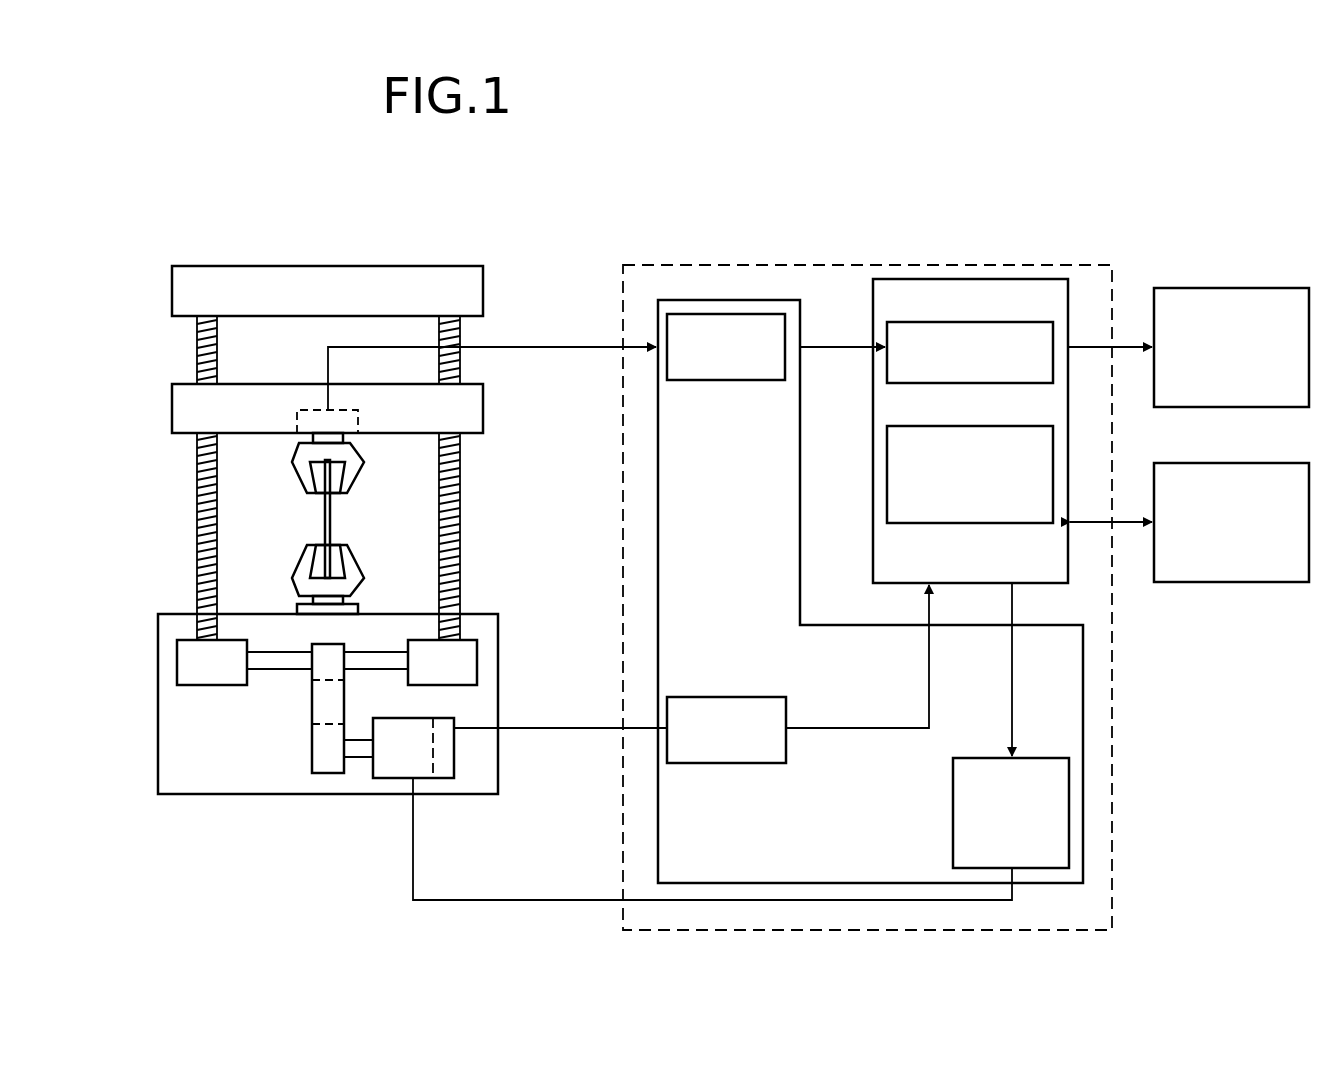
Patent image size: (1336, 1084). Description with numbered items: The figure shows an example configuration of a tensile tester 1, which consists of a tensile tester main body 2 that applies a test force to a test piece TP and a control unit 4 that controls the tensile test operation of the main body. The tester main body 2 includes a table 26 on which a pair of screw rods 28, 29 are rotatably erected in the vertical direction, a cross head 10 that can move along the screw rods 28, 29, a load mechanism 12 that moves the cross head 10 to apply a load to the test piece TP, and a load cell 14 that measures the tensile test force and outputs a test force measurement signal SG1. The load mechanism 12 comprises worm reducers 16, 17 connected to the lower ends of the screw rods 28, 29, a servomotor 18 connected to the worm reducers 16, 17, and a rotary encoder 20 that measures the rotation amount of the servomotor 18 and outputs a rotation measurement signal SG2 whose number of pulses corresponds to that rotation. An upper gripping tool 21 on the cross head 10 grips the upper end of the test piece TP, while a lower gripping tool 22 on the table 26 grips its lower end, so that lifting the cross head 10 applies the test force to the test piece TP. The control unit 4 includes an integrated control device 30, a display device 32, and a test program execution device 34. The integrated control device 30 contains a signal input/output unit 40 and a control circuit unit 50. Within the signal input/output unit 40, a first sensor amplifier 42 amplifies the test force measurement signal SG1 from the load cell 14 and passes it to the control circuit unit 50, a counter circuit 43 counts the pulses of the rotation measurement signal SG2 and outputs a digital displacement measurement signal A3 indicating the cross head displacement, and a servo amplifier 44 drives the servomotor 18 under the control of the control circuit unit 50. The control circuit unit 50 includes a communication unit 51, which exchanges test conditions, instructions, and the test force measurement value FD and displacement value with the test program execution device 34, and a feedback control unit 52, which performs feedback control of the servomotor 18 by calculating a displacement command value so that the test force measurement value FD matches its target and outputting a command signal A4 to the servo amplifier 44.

The tensile tester 1 is at (677, 147).
The tensile tester main body 2 is at (368, 241).
The control unit 4 is at (1200, 187).
The cross head 10 is at (172, 405).
The load mechanism 12 is at (304, 832).
The load cell 14 is at (312, 420).
The worm reducer 16 is at (220, 675).
The worm reducer 17 is at (458, 668).
The servomotor 18 is at (395, 770).
The rotary encoder 20 is at (447, 745).
The upper gripping tool 21 is at (292, 470).
The lower gripping tool 22 is at (352, 583).
The table 26 is at (168, 760).
The screw rod 28 is at (197, 555).
The screw rod 29 is at (461, 575).
The integrated control device 30 is at (858, 265).
The display device 32 is at (1185, 300).
The test program execution device 34 is at (1210, 583).
The signal input/output unit 40 is at (738, 265).
The first sensor amplifier 42 is at (718, 380).
The counter circuit 43 is at (743, 740).
The servo amplifier 44 is at (962, 822).
The control circuit unit 50 is at (963, 285).
The communication unit 51 is at (967, 322).
The feedback control unit 52 is at (967, 426).
The test piece TP is at (325, 520).
The test force measurement signal SG1 is at (566, 345).
The rotation measurement signal SG2 is at (518, 728).
The test force measurement value FD is at (840, 345).
The displacement measurement signal A3 is at (929, 672).
The command signal A4 is at (1012, 720).